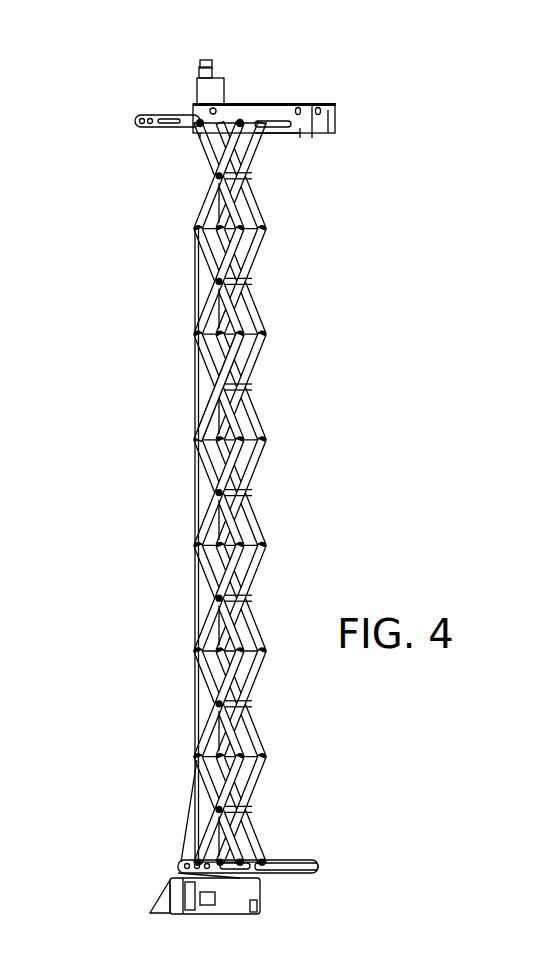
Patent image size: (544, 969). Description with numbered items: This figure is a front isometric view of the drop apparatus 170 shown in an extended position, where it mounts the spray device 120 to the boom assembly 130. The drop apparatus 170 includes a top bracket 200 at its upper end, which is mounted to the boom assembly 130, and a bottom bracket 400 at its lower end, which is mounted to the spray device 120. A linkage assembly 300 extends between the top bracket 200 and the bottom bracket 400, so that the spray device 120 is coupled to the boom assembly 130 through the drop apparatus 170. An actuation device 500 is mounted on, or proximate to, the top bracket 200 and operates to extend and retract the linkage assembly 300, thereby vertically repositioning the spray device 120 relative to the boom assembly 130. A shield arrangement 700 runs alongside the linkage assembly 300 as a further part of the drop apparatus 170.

The spray device 120 is at (160, 903).
The boom assembly 130 is at (278, 112).
The drop apparatus 170 is at (276, 493).
The top bracket 200 is at (190, 118).
The linkage assembly 300 is at (258, 362).
The bottom bracket 400 is at (270, 862).
The actuation device 500 is at (275, 132).
The shield arrangement 700 is at (197, 610).